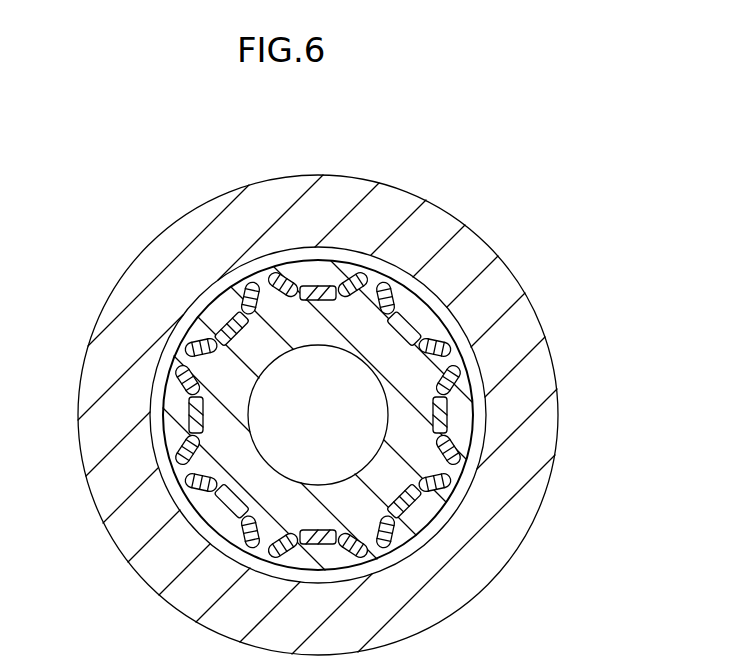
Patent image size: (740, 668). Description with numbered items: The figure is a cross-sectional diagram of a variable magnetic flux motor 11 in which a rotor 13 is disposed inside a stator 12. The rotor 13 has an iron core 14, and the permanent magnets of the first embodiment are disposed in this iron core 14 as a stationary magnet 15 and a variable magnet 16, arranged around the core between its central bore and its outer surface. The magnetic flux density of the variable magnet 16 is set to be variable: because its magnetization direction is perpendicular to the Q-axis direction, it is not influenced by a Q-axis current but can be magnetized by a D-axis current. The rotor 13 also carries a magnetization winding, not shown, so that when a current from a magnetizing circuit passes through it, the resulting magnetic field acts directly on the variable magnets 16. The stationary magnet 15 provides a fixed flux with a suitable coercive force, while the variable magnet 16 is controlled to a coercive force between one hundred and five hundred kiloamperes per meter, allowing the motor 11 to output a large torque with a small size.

The variable magnetic flux motor 11 is at (500, 176).
The stator 12 is at (545, 505).
The rotor 13 is at (540, 222).
The iron core 14 is at (428, 333).
The stationary magnet 15 is at (443, 352).
The variable magnet 16 is at (455, 378).